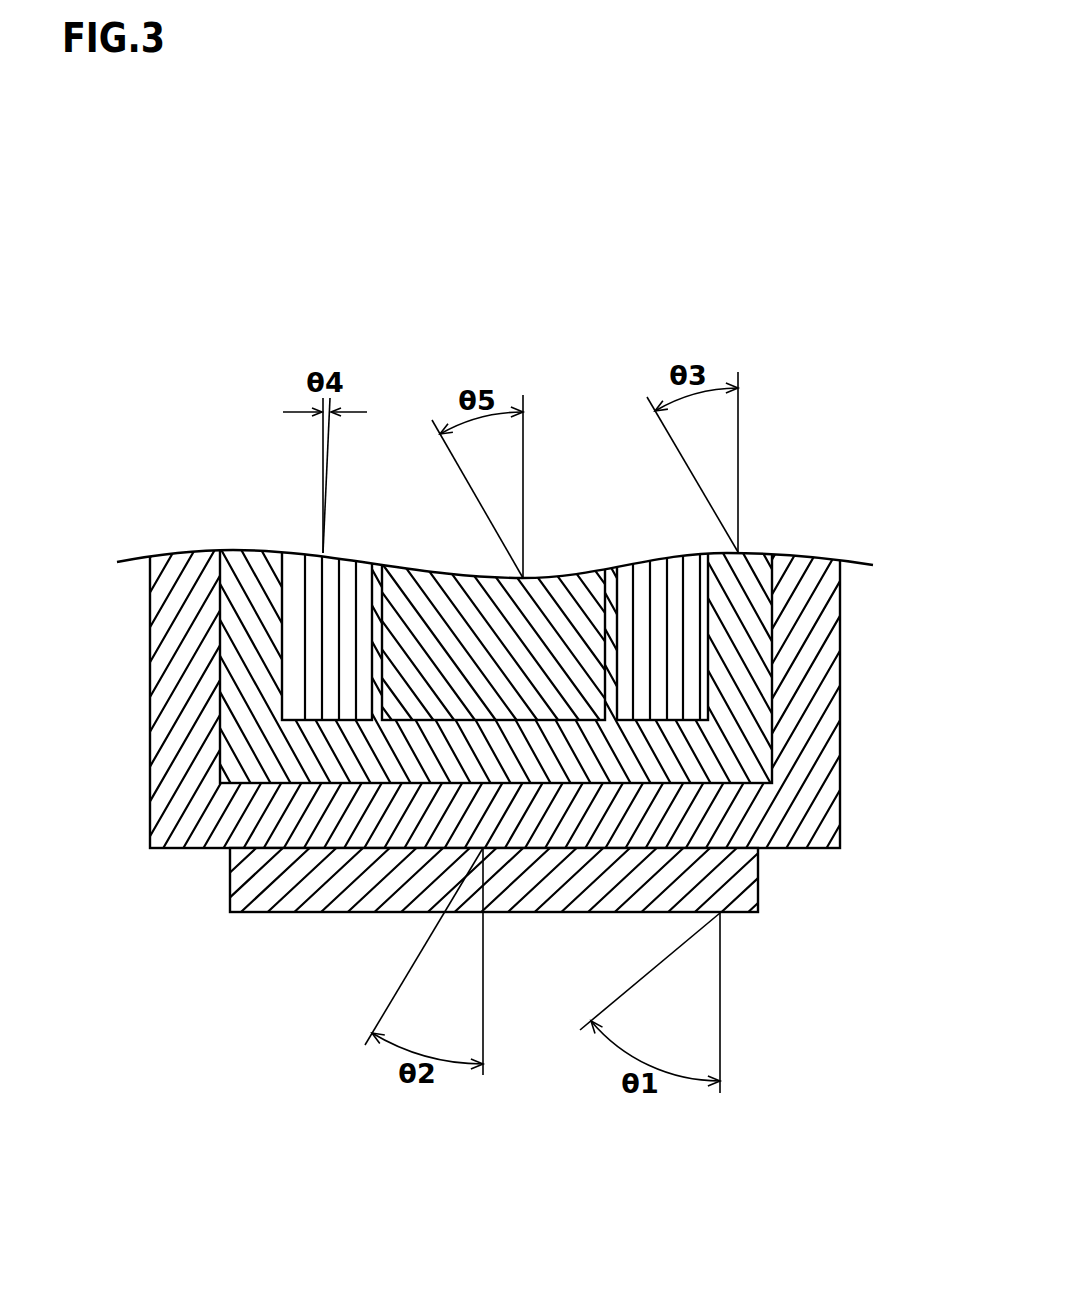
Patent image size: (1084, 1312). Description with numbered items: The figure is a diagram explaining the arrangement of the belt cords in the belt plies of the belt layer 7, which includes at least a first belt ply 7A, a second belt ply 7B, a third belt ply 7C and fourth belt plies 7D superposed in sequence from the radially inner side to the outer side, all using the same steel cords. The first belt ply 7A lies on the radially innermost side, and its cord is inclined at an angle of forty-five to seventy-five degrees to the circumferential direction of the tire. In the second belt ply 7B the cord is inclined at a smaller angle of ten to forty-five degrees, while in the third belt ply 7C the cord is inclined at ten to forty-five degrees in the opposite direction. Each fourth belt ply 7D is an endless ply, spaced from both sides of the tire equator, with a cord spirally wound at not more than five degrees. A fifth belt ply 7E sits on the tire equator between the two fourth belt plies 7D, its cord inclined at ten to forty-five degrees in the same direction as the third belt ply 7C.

The belt layer 7 is at (830, 510).
The first belt ply 7A is at (758, 878).
The second belt ply 7B is at (842, 818).
The third belt ply 7C is at (775, 702).
The fourth belt ply 7D is at (298, 650).
The fifth belt ply 7E is at (582, 573).